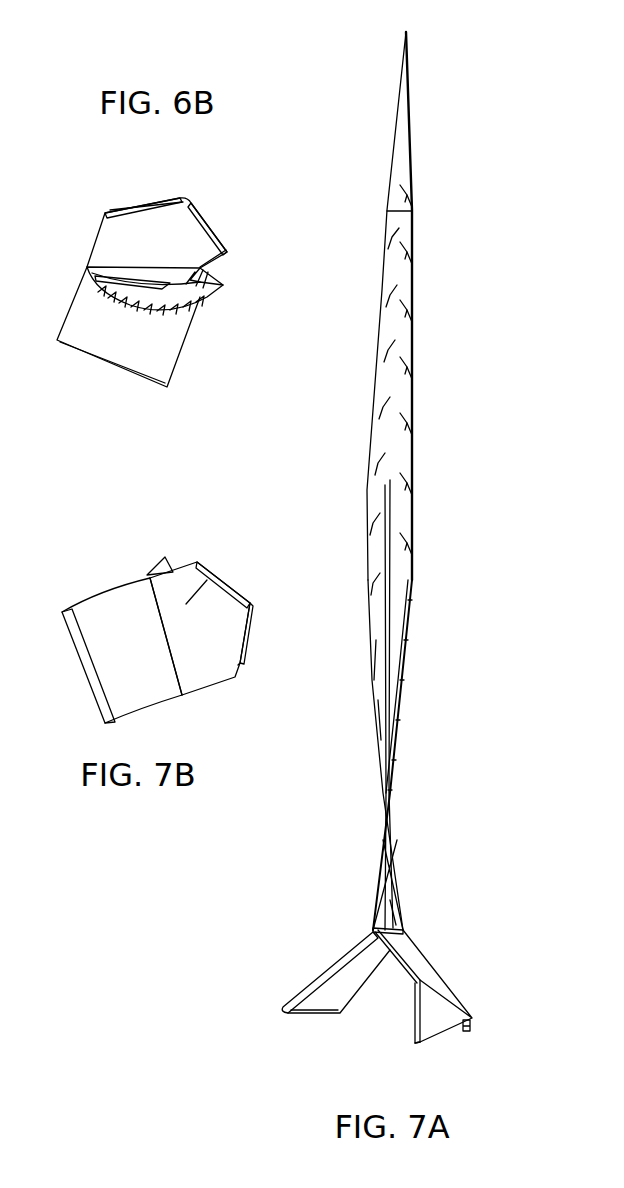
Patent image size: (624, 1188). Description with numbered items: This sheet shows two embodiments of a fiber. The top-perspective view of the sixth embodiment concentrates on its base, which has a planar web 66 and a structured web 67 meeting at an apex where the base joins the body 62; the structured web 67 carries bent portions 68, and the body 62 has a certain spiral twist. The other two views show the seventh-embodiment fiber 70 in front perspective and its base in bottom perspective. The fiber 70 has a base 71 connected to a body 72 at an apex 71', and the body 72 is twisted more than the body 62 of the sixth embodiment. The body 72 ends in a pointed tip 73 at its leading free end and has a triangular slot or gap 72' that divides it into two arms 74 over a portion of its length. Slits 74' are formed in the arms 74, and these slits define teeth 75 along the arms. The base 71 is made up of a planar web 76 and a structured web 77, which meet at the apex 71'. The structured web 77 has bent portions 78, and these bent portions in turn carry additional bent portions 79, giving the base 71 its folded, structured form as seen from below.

In FIG. 6B, the body 62 is at (220, 295).
In FIG. 6B, the planar web 66 is at (103, 342).
In FIG. 6B, the structured web 67 is at (115, 240).
In FIG. 6B, the bent portions 68 is at (128, 200).
In FIG. 7A, the fiber 70 is at (337, 450).
In FIG. 7A, the base 71 is at (432, 936).
In FIG. 7B, the apex 71' is at (142, 626).
In FIG. 7A, the apex 71' is at (321, 938).
In FIG. 7A, the body 72 is at (425, 885).
In FIG. 7A, the triangular slot or gap 72' is at (438, 705).
In FIG. 7A, the pointed tip 73 is at (408, 30).
In FIG. 7A, the arms 74 is at (390, 557).
In FIG. 7A, the slits 74' is at (346, 411).
In FIG. 7A, the teeth 75 is at (367, 497).
In FIG. 7B, the planar web 76 is at (108, 602).
In FIG. 7A, the planar web 76 is at (330, 957).
In FIG. 7B, the structured web 77 is at (198, 683).
In FIG. 7A, the structured web 77 is at (448, 980).
In FIG. 7B, the bent portions 78 is at (240, 655).
In FIG. 7A, the bent portions 78 is at (432, 1008).
In FIG. 7B, the additional bent portions 79 is at (200, 560).
In FIG. 7A, the additional bent portions 79 is at (430, 1040).